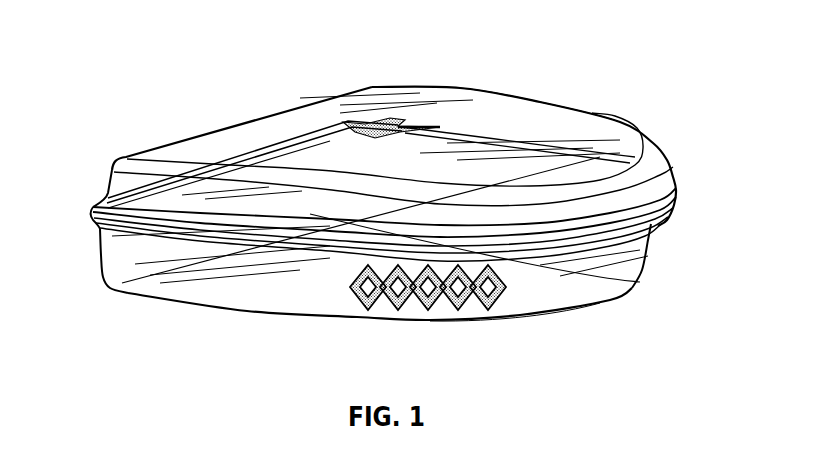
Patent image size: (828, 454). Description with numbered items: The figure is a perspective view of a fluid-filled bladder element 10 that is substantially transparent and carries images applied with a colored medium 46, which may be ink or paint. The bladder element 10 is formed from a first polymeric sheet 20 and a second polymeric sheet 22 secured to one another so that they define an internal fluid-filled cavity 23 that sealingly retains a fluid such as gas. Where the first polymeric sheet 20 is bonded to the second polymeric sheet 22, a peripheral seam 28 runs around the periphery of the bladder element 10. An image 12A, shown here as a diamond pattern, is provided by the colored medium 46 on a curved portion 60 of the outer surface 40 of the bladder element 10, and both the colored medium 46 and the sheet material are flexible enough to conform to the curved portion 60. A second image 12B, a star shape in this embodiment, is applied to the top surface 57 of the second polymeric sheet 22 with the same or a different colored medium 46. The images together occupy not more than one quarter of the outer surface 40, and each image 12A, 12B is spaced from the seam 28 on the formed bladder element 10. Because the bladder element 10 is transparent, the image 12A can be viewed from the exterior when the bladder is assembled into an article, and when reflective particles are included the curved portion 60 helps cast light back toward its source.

The fluid-filled bladder element 10 is at (603, 74).
The image 12A is at (370, 321).
The second image 12B is at (364, 127).
The first polymeric sheet 20 is at (132, 254).
The second polymeric sheet 22 is at (267, 133).
The internal fluid-filled cavity 23 is at (411, 160).
The peripheral seam 28 is at (666, 215).
The outer surface 40 is at (194, 278).
The colored medium 46 is at (437, 302).
The top surface 57 is at (516, 132).
The curved portion 60 is at (502, 309).